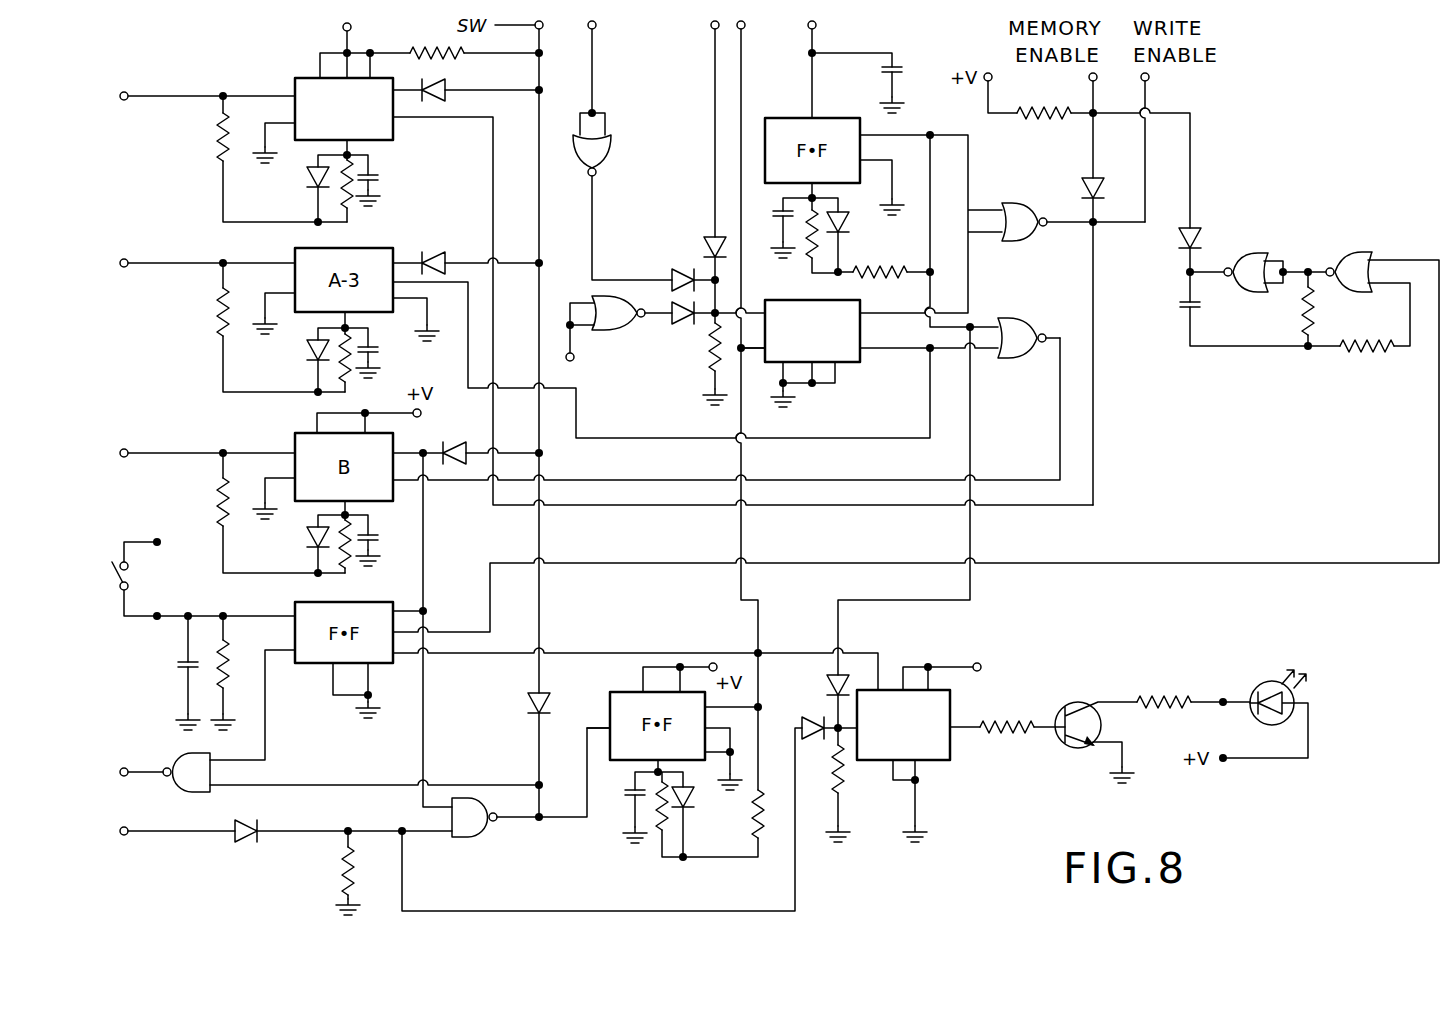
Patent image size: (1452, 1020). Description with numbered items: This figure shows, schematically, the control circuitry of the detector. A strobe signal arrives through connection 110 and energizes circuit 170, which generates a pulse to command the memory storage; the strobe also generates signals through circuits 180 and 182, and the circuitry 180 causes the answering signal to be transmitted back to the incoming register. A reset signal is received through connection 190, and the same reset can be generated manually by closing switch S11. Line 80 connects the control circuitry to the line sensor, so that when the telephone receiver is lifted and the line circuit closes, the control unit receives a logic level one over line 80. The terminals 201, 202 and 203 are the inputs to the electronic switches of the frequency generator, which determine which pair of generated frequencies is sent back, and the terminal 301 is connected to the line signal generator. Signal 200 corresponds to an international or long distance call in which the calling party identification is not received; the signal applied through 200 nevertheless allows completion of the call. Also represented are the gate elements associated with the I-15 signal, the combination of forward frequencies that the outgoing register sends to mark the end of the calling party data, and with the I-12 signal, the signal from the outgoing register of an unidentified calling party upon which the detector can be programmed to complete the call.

The circuitry 180 is at (296, 76).
The circuit 182 is at (862, 353).
The circuit 170 is at (952, 741).
The connection 190 is at (745, 27).
The connection 110 is at (816, 25).
The signal 200 is at (711, 30).
The terminal 201 is at (124, 100).
The terminal 202 is at (124, 267).
The terminal 203 is at (124, 449).
The terminal 301 is at (124, 768).
The line 80 is at (124, 827).
The switch S11 is at (128, 572).
The I-15 signal I-15 is at (646, 156).
The signal I-12 is at (640, 332).